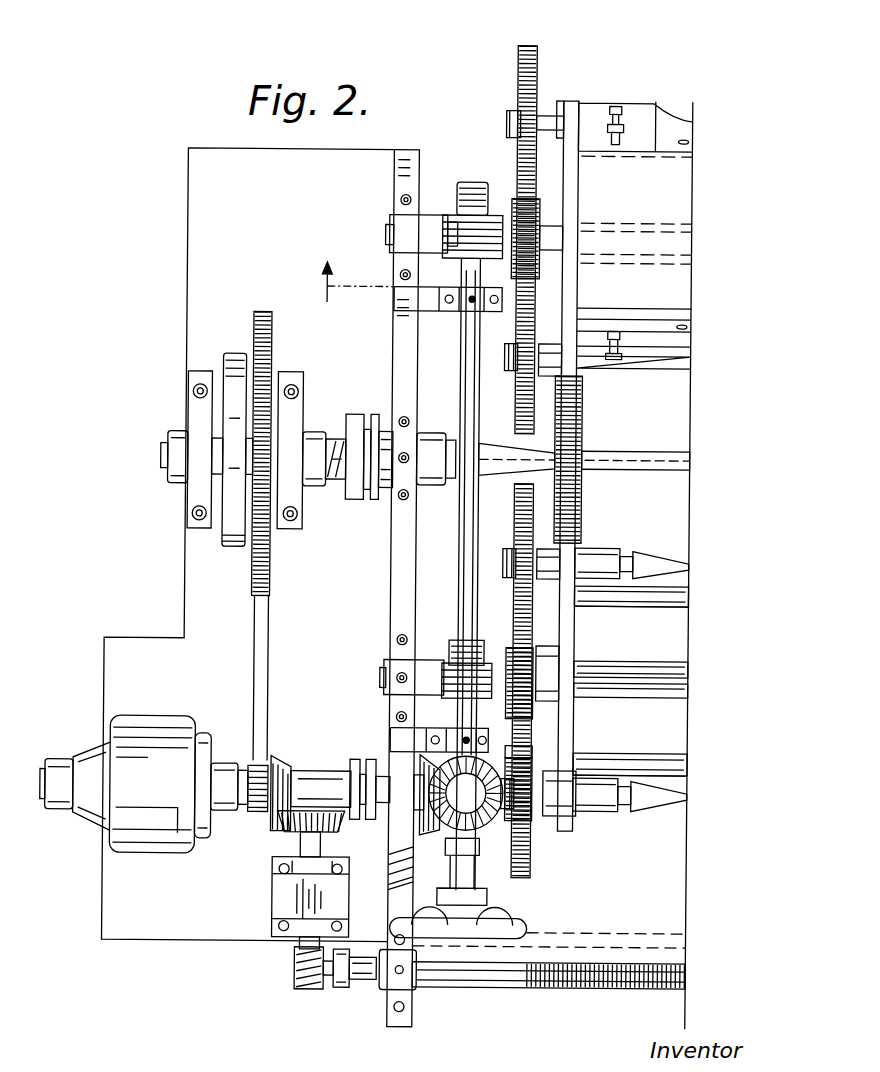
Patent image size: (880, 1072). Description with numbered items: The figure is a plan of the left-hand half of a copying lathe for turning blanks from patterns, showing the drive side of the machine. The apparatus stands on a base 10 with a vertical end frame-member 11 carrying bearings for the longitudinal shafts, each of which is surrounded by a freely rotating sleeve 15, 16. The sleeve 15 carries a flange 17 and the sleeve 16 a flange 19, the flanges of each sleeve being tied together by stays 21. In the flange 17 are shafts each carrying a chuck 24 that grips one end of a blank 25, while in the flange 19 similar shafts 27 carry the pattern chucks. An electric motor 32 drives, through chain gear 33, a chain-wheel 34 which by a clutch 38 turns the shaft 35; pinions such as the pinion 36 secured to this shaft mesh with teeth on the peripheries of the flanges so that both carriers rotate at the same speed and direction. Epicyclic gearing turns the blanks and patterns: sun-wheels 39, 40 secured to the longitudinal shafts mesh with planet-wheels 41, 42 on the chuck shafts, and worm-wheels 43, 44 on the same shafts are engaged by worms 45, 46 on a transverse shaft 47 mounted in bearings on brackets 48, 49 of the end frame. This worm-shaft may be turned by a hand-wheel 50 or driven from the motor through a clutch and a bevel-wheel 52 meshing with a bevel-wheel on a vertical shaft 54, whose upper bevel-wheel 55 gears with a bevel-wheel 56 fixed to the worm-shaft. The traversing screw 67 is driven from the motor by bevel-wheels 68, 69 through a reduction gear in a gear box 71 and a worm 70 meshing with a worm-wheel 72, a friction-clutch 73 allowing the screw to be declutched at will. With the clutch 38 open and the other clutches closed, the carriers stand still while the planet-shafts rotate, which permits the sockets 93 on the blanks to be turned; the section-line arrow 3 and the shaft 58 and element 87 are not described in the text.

The section line 3 is at (340, 285).
The base 10 is at (185, 272).
The end frame-member 11 is at (393, 587).
The sleeve 15 is at (615, 660).
The sleeve 16 is at (665, 268).
The flange 17 is at (559, 807).
The flange 19 is at (578, 172).
The stay 21 is at (670, 765).
The chuck 24 is at (608, 556).
The blank 25 is at (668, 805).
The shaft 27 is at (505, 125).
The electric motor 32 is at (155, 740).
The chain gear 33 is at (256, 626).
The chain-wheel 34 is at (255, 555).
The shaft 35 is at (628, 458).
The pinion 36 is at (581, 390).
The clutch 38 is at (325, 482).
The sun-wheel 39 is at (535, 657).
The sun-wheel 40 is at (512, 200).
The planet-wheel 41 is at (520, 505).
The planet-wheel 42 is at (516, 60).
The worm-wheel 43 is at (458, 645).
The worm-wheel 44 is at (462, 190).
The worm 45 is at (440, 678).
The worm 46 is at (387, 232).
The transverse shaft 47 is at (465, 556).
The bracket 48 is at (465, 300).
The bracket 49 is at (425, 728).
The hand-wheel 50 is at (520, 930).
The bevel-wheel 52 is at (425, 808).
The vertical shaft 54 is at (475, 832).
The bevel-wheel 55 is at (528, 753).
The bevel-wheel 56 is at (528, 837).
The shaft 58 is at (347, 770).
The screw 67 is at (630, 985).
The bevel-wheel 68 is at (285, 772).
The bevel-wheel 69 is at (280, 828).
The worm 70 is at (298, 962).
The gear box 71 is at (300, 900).
The worm-wheel 72 is at (302, 990).
The friction-clutch 73 is at (362, 988).
The worm 87 is at (233, 360).
The socket 93 is at (630, 560).